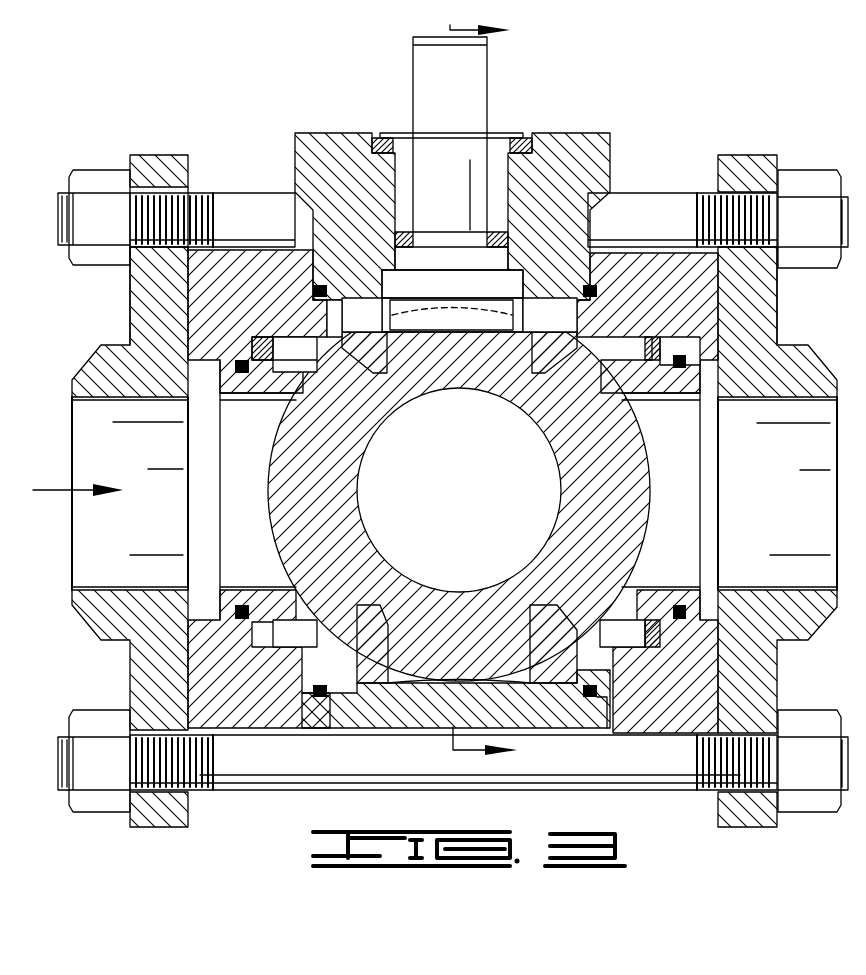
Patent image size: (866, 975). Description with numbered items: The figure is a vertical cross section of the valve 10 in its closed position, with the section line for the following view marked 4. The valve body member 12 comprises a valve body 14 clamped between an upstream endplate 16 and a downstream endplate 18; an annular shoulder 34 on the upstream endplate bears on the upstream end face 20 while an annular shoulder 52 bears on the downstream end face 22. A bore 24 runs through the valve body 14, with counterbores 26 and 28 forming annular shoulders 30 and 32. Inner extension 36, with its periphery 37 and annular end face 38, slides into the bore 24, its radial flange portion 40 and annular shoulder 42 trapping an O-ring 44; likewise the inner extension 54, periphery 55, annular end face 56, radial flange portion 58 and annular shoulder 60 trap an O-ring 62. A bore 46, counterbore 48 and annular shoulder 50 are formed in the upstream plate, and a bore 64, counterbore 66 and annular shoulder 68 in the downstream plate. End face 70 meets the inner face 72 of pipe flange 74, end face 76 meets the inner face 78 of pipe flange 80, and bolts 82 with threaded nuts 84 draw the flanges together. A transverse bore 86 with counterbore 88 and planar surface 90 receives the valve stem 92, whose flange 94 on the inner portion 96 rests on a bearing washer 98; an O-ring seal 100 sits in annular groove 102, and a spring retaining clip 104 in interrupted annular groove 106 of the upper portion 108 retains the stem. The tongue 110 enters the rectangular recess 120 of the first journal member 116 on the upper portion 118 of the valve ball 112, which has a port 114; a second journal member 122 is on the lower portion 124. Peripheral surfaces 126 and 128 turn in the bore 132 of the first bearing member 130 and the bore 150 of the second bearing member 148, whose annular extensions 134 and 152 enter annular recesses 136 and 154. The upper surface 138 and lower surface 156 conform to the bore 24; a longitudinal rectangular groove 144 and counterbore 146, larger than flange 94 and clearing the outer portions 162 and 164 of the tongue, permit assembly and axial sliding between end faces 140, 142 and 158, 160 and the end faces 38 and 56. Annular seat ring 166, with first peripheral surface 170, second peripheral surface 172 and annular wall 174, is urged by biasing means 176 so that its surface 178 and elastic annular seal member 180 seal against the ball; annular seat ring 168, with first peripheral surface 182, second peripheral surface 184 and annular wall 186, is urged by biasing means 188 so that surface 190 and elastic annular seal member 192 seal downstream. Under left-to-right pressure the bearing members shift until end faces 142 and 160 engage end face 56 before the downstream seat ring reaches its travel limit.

The valve 10 is at (690, 110).
The valve body member 12 is at (620, 132).
The valve body 14 is at (587, 216).
The upstream endplate 16 is at (220, 252).
The downstream endplate 18 is at (717, 263).
The upstream end face 20 is at (290, 262).
The downstream end face 22 is at (612, 271).
The bore 24 is at (390, 682).
The counterbore 26 is at (300, 290).
The counterbore 28 is at (613, 292).
The annular shoulder 30 is at (318, 282).
The annular shoulder 32 is at (577, 282).
The annular shoulder 34 is at (362, 240).
The inner extension 36 is at (315, 642).
The periphery 37 is at (333, 690).
The annular end face 38 is at (340, 670).
The radial flange portion 40 is at (313, 700).
The annular shoulder 42 is at (323, 677).
The O-ring 44 is at (313, 297).
The bore 46 is at (210, 362).
The counterbore 48 is at (283, 348).
The annular shoulder 50 is at (257, 328).
The annular shoulder 52 is at (540, 263).
The inner extension 54 is at (602, 630).
The periphery 55 is at (583, 688).
The annular end face 56 is at (524, 683).
The radial flange portion 58 is at (607, 697).
The annular shoulder 60 is at (597, 683).
The O-ring 62 is at (592, 300).
The bore 64 is at (720, 372).
The counterbore 66 is at (613, 340).
The annular shoulder 68 is at (658, 342).
The end face 70 is at (188, 273).
The inner face 72 is at (200, 286).
The pipe flange 74 is at (170, 150).
The end face 76 is at (718, 285).
The inner face 78 is at (717, 273).
The pipe flange 80 is at (745, 157).
The bolts 82 is at (653, 198).
The threaded nuts 84 is at (105, 170).
The transverse bore 86 is at (398, 192).
The counterbore 88 is at (390, 273).
The planar surface 90 is at (520, 273).
The valve stem 92 is at (477, 70).
The flange 94 is at (462, 260).
The inner portion 96 is at (473, 273).
The bearing washer 98 is at (390, 260).
The O-ring seal 100 is at (408, 233).
The annular groove 102 is at (477, 240).
The spring retaining clip 104 is at (502, 133).
The interrupted annular groove 106 is at (428, 133).
The upper portion 108 is at (414, 61).
The tongue 110 is at (435, 333).
The valve ball 112 is at (343, 488).
The port 114 is at (475, 492).
The first journal member 116 is at (440, 373).
The upper portion 118 is at (465, 373).
The rectangular recess 120 is at (463, 327).
The second journal member 122 is at (438, 607).
The lower portion 124 is at (480, 597).
The peripheral surface 126 is at (385, 350).
The peripheral surface 128 is at (382, 622).
The first bearing member 130 is at (530, 350).
The bore 132 is at (523, 365).
The annular extension 134 is at (377, 378).
The annular recess 136 is at (367, 375).
The upper surface 138 is at (355, 297).
The end face 140 is at (328, 323).
The end face 142 is at (603, 368).
The longitudinal rectangular groove 144 is at (393, 313).
The counterbore 146 is at (390, 297).
The second bearing member 148 is at (530, 628).
The bore 150 is at (528, 643).
The annular extension 152 is at (538, 605).
The annular recess 154 is at (557, 607).
The lower surface 156 is at (385, 690).
The end face 158 is at (337, 625).
The end face 160 is at (590, 627).
The outer portion 162 is at (397, 313).
The outer portion 164 is at (530, 317).
The annular seat ring 166 is at (247, 598).
The annular seat ring 168 is at (645, 605).
The first peripheral surface 170 is at (228, 355).
The second peripheral surface 172 is at (282, 330).
The annular wall 174 is at (263, 395).
The biasing means 176 is at (253, 620).
The surface 178 is at (312, 390).
The elastic annular seal member 180 is at (293, 400).
The first peripheral surface 182 is at (700, 348).
The second peripheral surface 184 is at (640, 347).
The annular wall 186 is at (641, 367).
The biasing means 188 is at (652, 633).
The surface 190 is at (596, 373).
The elastic annular seal member 192 is at (618, 390).
The section line 4- 4 is at (491, 395).